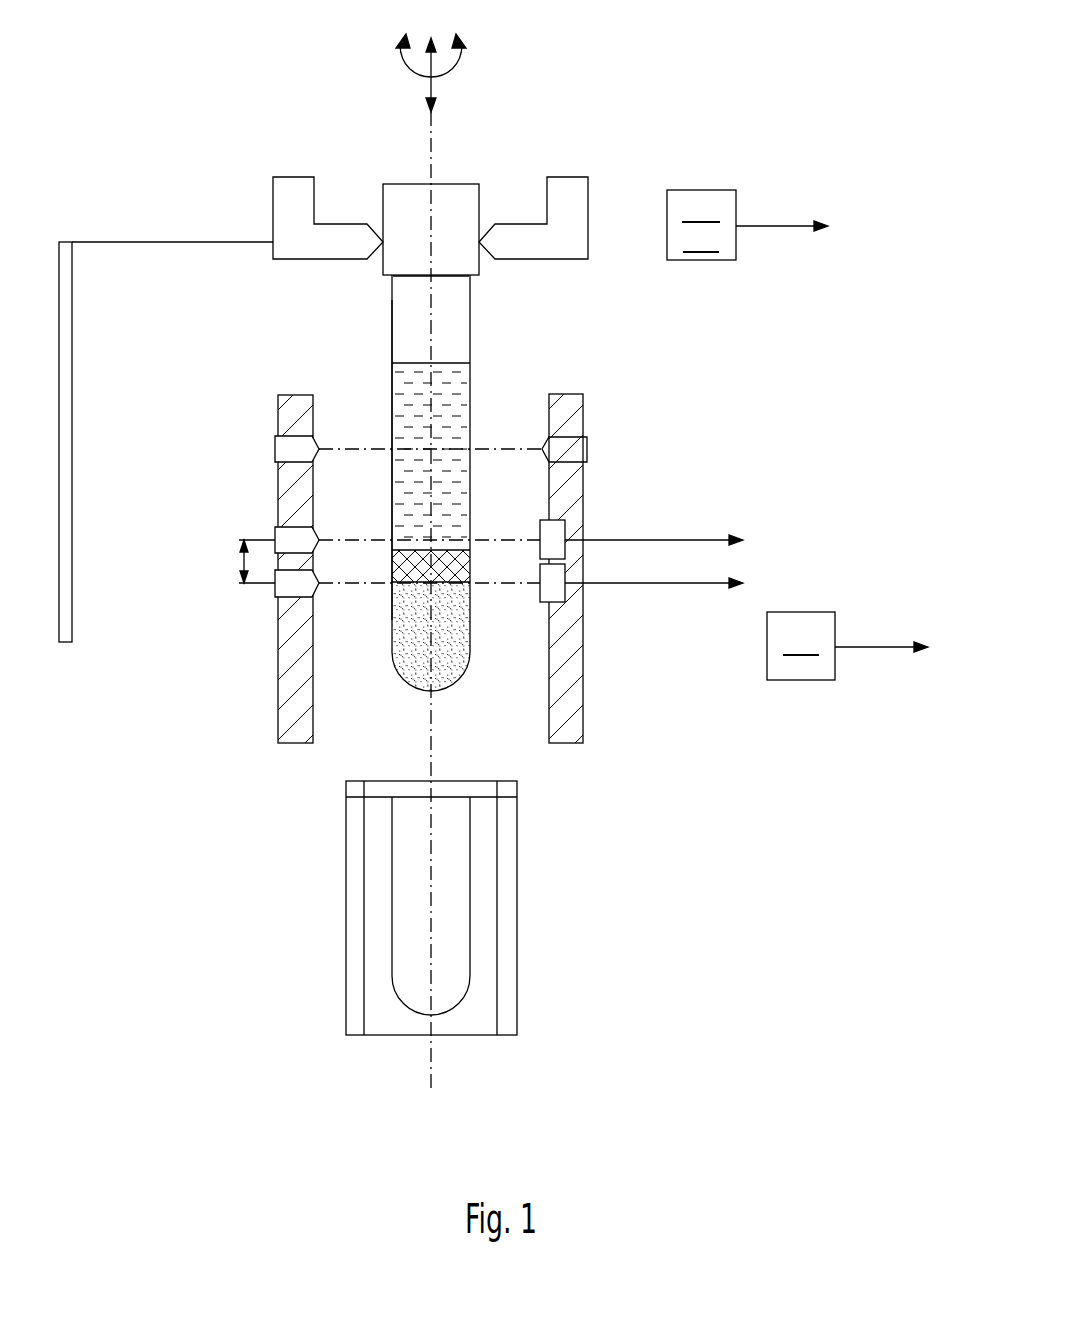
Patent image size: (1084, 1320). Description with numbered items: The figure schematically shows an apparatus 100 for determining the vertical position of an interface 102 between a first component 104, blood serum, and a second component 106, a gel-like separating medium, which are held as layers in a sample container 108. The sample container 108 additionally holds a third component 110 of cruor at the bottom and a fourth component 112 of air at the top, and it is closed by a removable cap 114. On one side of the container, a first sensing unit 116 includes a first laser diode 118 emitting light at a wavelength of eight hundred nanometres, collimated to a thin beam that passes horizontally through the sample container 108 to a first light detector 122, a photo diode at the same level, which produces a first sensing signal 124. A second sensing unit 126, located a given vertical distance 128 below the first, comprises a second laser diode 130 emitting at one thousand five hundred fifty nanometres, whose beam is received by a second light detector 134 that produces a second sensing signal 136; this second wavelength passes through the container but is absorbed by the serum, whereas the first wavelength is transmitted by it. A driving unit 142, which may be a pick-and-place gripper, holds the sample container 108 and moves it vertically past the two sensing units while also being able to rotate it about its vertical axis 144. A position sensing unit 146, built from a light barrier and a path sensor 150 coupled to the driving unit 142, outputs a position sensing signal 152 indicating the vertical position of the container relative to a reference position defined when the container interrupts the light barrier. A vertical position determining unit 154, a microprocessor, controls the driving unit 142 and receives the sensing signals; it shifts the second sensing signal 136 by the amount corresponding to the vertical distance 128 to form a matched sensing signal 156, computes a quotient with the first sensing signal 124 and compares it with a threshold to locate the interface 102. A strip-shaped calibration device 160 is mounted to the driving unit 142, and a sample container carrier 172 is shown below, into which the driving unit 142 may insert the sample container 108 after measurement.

The apparatus 100 is at (852, 136).
The interface 102 is at (447, 542).
The first component 104 is at (404, 496).
The second component 106 is at (393, 562).
The sample container 108 is at (470, 328).
The third component 110 is at (402, 633).
The fourth component 112 is at (404, 328).
The removable cap 114 is at (460, 193).
The first sensing unit 116 is at (198, 534).
The first laser diode 118 is at (283, 535).
The first light detector 122 is at (558, 533).
The first sensing signal 124 is at (690, 537).
The second sensing unit 126 is at (198, 582).
The vertical distance 128 is at (238, 560).
The second laser diode 130 is at (282, 590).
The second light detector 134 is at (558, 593).
The second sensing signal 136 is at (690, 587).
The driving unit 142 is at (285, 214).
The vertical axis 144 is at (425, 117).
The position sensing unit 146 is at (290, 449).
The path sensor 150 is at (701, 225).
The position sensing signal 152 is at (773, 223).
The vertical position determining unit 154 is at (801, 646).
The matched sensing signal 156 is at (872, 645).
The calibration device 160 is at (72, 373).
The sample container carrier 172 is at (509, 893).